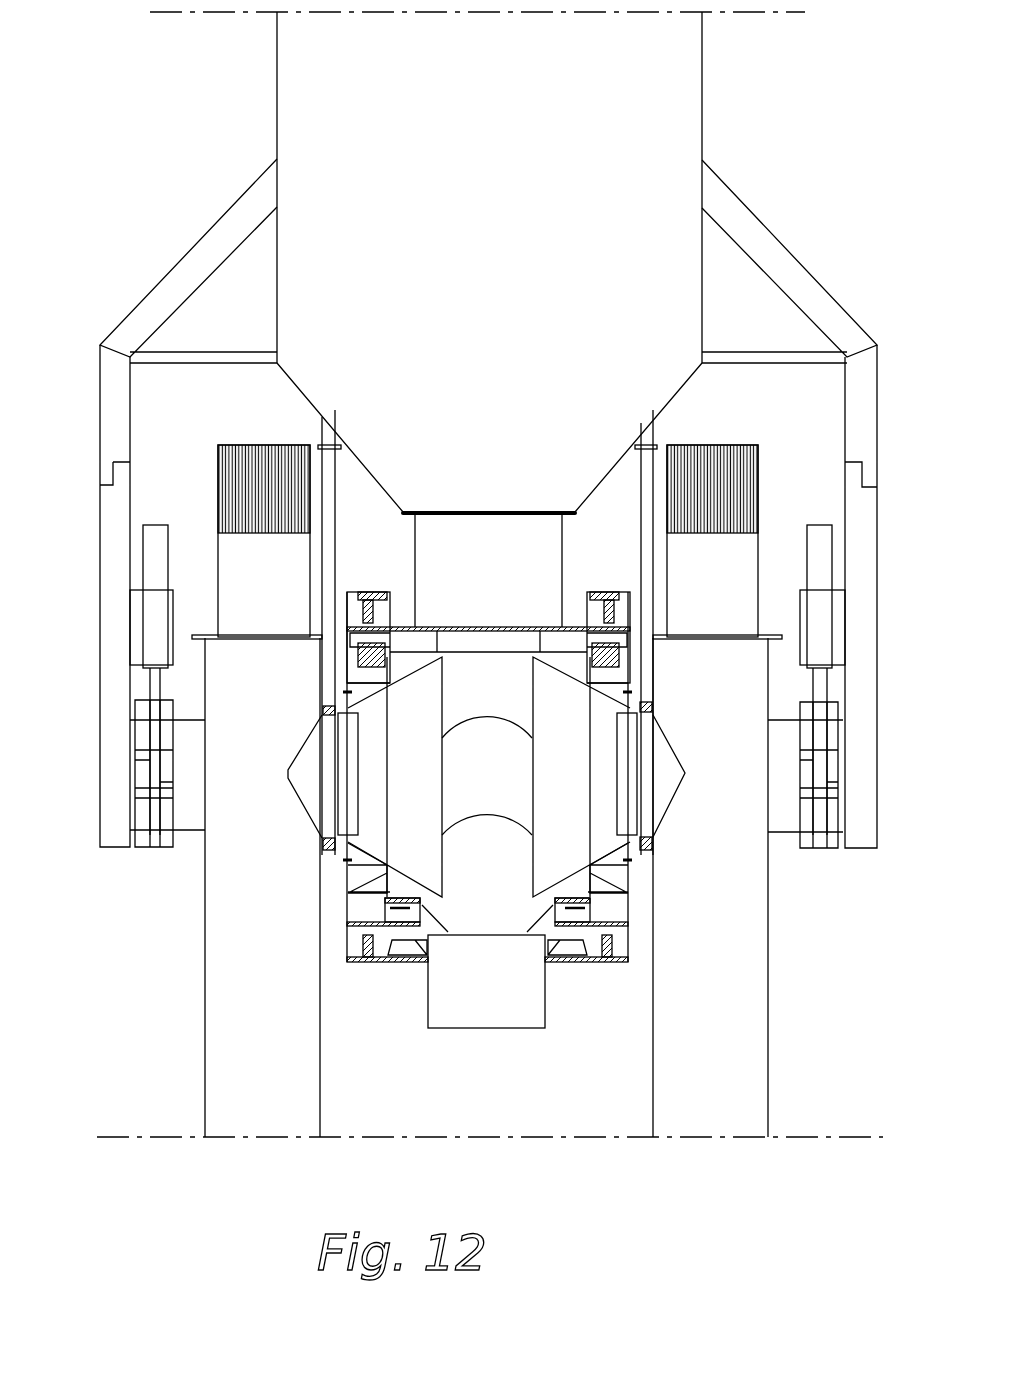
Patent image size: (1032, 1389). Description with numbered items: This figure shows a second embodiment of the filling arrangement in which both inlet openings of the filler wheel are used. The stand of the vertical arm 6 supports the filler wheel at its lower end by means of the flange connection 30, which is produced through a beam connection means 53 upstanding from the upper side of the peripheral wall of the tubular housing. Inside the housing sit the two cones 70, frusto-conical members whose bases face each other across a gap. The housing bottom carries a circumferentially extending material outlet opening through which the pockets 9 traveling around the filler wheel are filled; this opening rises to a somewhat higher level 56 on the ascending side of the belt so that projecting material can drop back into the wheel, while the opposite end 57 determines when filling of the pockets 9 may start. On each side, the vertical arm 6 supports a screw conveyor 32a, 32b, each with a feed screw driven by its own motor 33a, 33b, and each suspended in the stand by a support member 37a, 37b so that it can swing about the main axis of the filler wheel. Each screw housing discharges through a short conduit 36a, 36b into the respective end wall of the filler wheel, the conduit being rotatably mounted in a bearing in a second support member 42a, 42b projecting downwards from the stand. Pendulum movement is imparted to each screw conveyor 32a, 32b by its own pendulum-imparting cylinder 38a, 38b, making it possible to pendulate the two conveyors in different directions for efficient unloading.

The vertical arm 6 is at (277, 100).
The pockets 9 is at (452, 1010).
The flange connection 30 is at (483, 511).
The screw conveyor 32a is at (197, 966).
The screw conveyor 32b is at (781, 1019).
The motor 33a is at (218, 470).
The motor 33b is at (748, 455).
The conduit 36a is at (320, 793).
The conduit 36b is at (662, 805).
The support member 37a is at (100, 535).
The support member 37b is at (873, 502).
The pendulum-imparting cylinder 38a is at (150, 583).
The pendulum-imparting cylinder 38b is at (825, 558).
The second support member 42a is at (333, 537).
The second support member 42b is at (653, 460).
The beam connection means 53 is at (563, 538).
The higher level of outlet opening 56 is at (484, 723).
The end opposite to the outlet opening 57 is at (487, 821).
The cone 70 is at (422, 883).